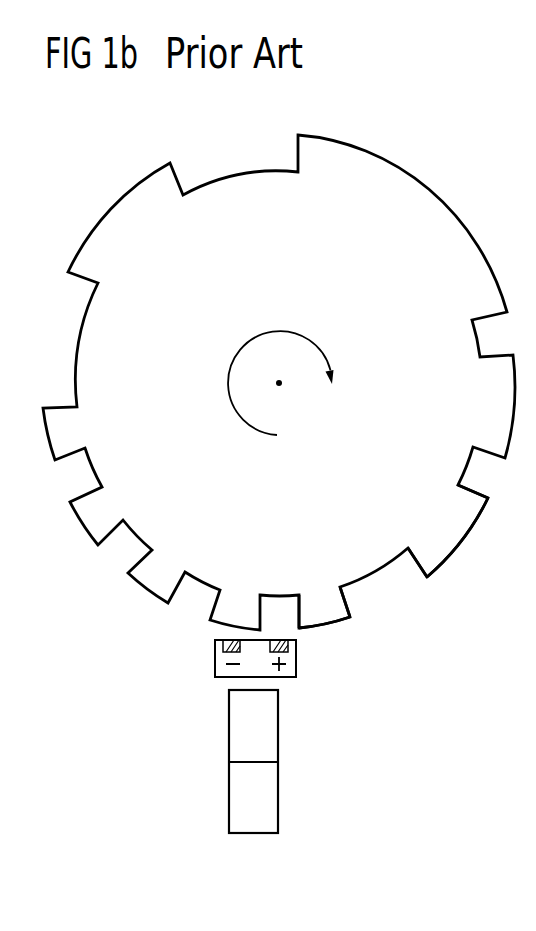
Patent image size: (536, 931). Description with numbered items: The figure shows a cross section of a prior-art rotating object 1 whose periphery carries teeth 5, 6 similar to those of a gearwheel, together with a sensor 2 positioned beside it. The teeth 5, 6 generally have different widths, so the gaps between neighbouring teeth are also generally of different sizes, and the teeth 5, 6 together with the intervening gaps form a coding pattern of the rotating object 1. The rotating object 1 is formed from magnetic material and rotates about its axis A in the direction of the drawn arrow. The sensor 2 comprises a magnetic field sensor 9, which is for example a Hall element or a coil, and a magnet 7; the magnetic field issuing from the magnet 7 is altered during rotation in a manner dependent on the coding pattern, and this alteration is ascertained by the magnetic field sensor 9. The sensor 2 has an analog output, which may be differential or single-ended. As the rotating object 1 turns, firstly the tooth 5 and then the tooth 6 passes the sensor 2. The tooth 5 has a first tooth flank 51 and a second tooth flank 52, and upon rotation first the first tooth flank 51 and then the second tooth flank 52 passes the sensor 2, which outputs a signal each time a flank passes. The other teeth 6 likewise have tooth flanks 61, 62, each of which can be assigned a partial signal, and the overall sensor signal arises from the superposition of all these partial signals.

The rotating object 1 is at (460, 158).
The sensor 2 is at (239, 735).
The tooth 5 is at (322, 626).
The first tooth flank 51 is at (296, 616).
The second tooth flank 52 is at (350, 605).
The tooth 6 is at (458, 537).
The tooth flank 61 is at (412, 565).
The tooth flank 62 is at (474, 486).
The magnet 7 is at (202, 743).
The magnetic field sensor 9 is at (215, 657).
The axis A is at (282, 385).